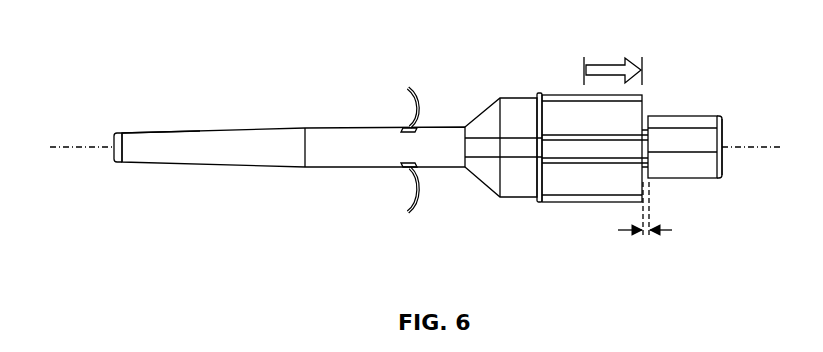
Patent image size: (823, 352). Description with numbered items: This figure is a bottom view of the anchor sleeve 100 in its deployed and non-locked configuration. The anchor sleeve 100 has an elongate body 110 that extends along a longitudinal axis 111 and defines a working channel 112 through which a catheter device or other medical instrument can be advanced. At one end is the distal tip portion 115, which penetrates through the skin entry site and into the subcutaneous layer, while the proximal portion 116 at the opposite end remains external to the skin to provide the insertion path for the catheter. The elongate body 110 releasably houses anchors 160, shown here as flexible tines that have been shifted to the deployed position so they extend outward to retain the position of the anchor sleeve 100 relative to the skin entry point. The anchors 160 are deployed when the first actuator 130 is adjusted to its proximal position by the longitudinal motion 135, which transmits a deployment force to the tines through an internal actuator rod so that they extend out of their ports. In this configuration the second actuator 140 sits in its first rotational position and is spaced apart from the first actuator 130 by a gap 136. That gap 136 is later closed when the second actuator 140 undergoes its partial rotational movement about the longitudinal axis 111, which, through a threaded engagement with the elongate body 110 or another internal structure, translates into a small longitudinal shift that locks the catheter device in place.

The anchor sleeve 100 is at (106, 44).
The elongate body 110 is at (320, 134).
The longitudinal axis 111 is at (92, 147).
The working channel 112 is at (114, 142).
The distal tip portion 115 is at (151, 128).
The proximal portion 116 is at (729, 135).
The first actuator 130 is at (566, 98).
The longitudinal motion 135 is at (606, 62).
The gap 136 is at (646, 234).
The second actuator 140 is at (677, 121).
The anchors 160 is at (408, 86).